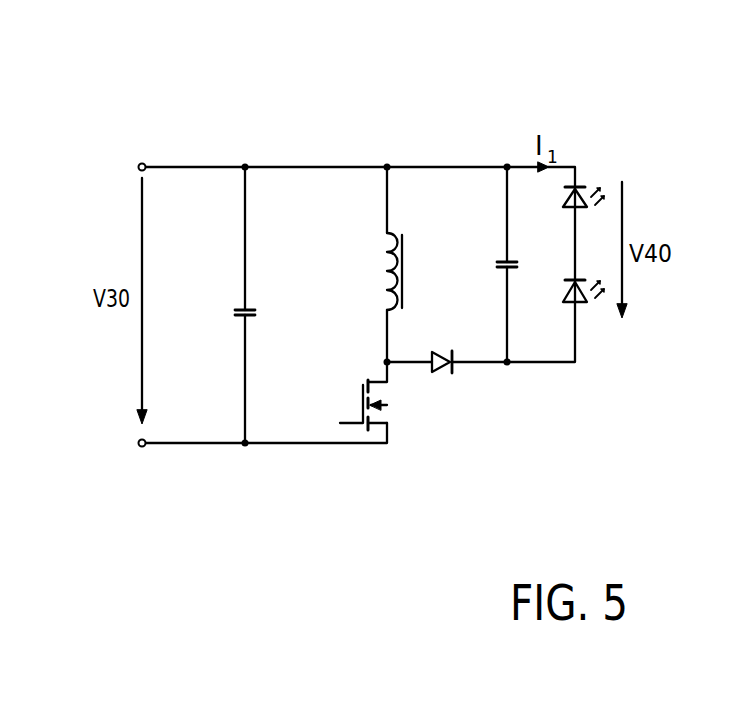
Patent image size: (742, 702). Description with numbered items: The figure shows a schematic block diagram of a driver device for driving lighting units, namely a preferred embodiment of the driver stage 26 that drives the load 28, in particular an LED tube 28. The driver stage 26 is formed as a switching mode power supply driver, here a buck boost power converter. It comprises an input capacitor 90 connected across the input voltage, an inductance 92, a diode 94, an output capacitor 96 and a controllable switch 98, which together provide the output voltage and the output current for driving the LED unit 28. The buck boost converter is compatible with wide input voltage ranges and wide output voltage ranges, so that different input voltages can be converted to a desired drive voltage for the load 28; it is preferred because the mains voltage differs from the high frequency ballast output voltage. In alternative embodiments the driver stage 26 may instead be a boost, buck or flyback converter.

The driver stage 26 is at (492, 99).
The LED tube 28 is at (649, 186).
The input capacitor 90 is at (238, 307).
The inductance 92 is at (403, 272).
The diode 94 is at (439, 372).
The output capacitor 96 is at (499, 261).
The controllable switch 98 is at (361, 403).